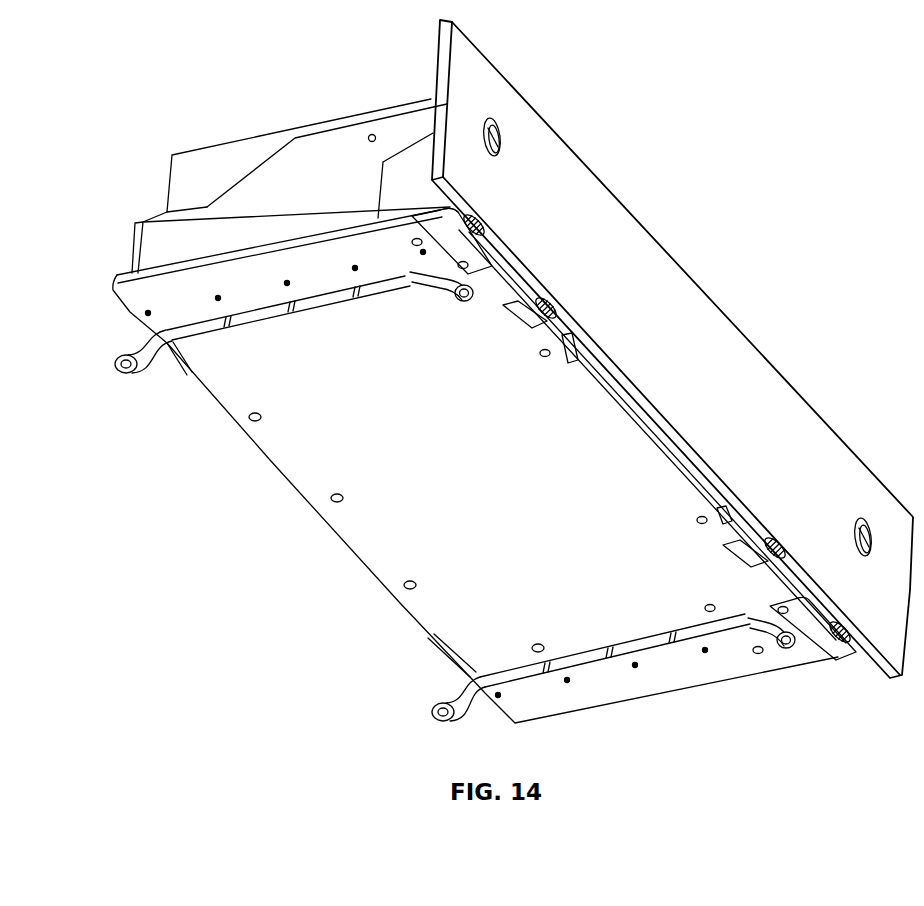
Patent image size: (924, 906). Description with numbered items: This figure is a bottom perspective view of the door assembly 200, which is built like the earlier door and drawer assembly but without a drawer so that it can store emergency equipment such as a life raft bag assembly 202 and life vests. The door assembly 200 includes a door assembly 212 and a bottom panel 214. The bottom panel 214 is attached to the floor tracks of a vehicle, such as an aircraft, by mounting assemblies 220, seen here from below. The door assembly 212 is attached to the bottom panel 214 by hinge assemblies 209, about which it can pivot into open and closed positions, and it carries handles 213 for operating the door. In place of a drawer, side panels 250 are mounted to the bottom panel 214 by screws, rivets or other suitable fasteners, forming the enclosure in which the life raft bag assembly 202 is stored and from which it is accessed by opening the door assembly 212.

The door assembly 200 is at (694, 124).
The life raft bag assembly 202 is at (203, 155).
The hinge assemblies 209 is at (515, 313).
The door assembly 212 is at (672, 272).
The handles 213 is at (500, 150).
The bottom panel 214 is at (350, 541).
The mounting assemblies 220 is at (127, 373).
The side panels 250 is at (307, 153).